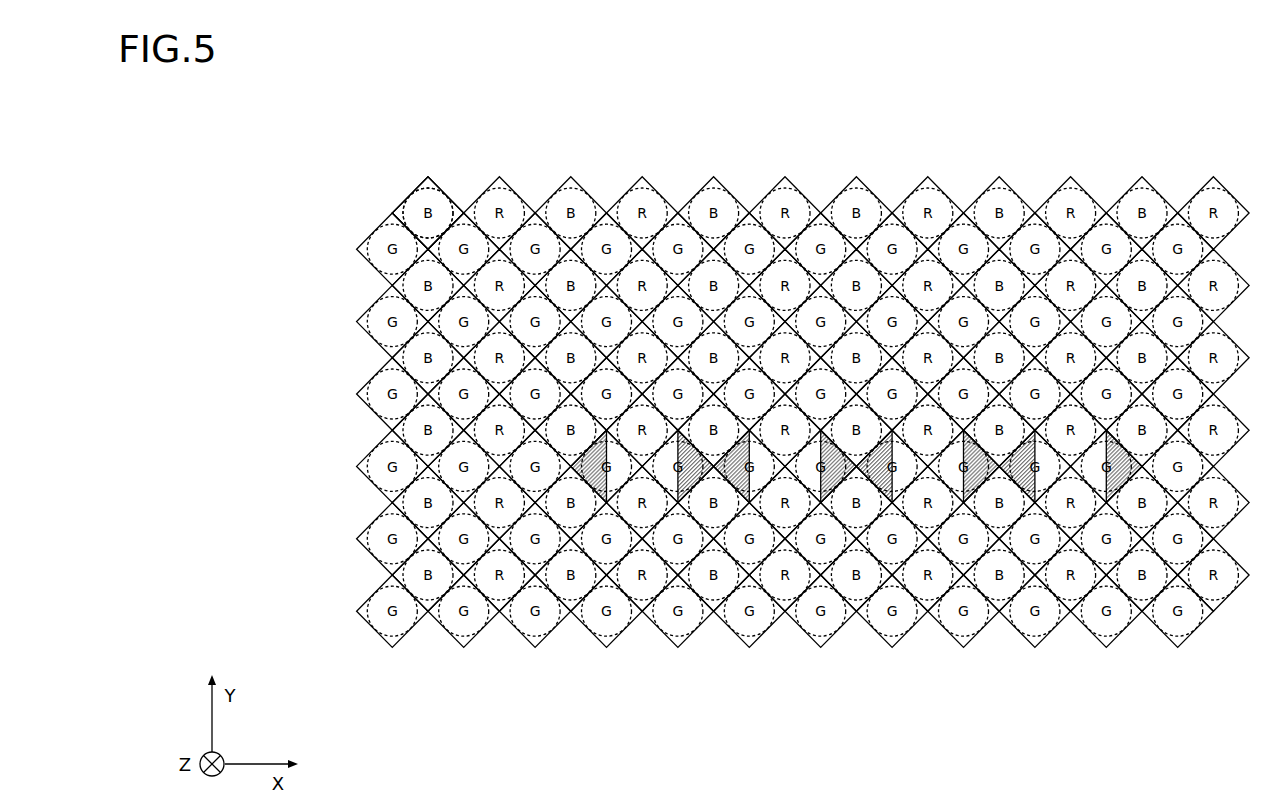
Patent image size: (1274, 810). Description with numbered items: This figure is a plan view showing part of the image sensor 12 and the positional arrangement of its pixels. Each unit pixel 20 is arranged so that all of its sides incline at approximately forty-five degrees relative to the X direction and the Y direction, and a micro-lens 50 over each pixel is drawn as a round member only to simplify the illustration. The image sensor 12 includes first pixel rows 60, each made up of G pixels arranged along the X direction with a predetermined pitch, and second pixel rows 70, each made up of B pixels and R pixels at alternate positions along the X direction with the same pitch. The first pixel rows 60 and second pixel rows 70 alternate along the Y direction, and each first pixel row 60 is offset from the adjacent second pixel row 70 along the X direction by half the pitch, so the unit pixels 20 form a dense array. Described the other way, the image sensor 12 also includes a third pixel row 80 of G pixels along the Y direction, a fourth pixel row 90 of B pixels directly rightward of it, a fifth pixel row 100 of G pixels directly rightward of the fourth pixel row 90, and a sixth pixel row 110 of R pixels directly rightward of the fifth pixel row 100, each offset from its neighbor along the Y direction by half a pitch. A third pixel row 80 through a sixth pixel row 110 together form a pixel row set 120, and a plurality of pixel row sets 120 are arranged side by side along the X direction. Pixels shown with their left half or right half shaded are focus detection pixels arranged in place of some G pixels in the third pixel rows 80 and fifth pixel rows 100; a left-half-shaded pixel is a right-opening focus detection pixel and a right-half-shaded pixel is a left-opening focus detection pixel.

The image sensor 12 is at (764, 438).
The unit pixel 20 is at (400, 200).
The micro-lens 50 is at (428, 178).
The first pixel row 60 is at (746, 472).
The second pixel row 70 is at (783, 433).
The third pixel row 80 is at (749, 471).
The fourth pixel row 90 is at (784, 433).
The fifth pixel row 100 is at (820, 472).
The sixth pixel row 110 is at (856, 433).
The pixel row set 120 is at (764, 485).